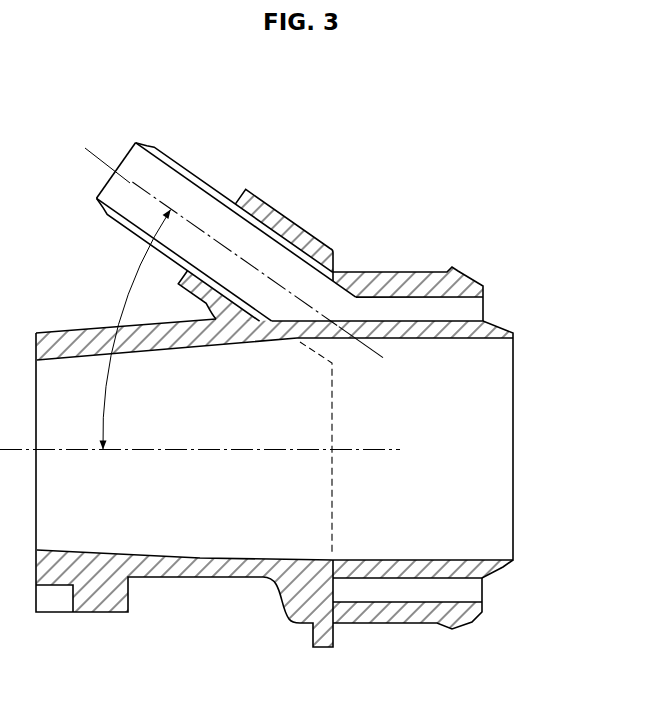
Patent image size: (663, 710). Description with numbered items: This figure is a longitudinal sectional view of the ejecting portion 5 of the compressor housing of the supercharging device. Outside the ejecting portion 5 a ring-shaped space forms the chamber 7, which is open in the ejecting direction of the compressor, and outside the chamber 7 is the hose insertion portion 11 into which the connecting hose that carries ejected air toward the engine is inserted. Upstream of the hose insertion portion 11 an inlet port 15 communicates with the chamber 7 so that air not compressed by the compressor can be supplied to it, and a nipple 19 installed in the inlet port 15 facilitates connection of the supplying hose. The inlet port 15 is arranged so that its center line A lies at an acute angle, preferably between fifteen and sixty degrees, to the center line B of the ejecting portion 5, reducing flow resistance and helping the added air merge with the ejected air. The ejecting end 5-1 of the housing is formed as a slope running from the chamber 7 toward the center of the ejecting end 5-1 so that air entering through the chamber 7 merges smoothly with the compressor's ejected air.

The ejecting portion 5 is at (518, 474).
The ejecting end 5-1 is at (500, 571).
The chamber 7 is at (468, 310).
The hose insertion portion 11 is at (485, 267).
The inlet port 15 is at (284, 272).
The nipple 19 is at (187, 170).
The center line of the inlet port A is at (100, 150).
The center line of the ejecting portion B is at (207, 450).